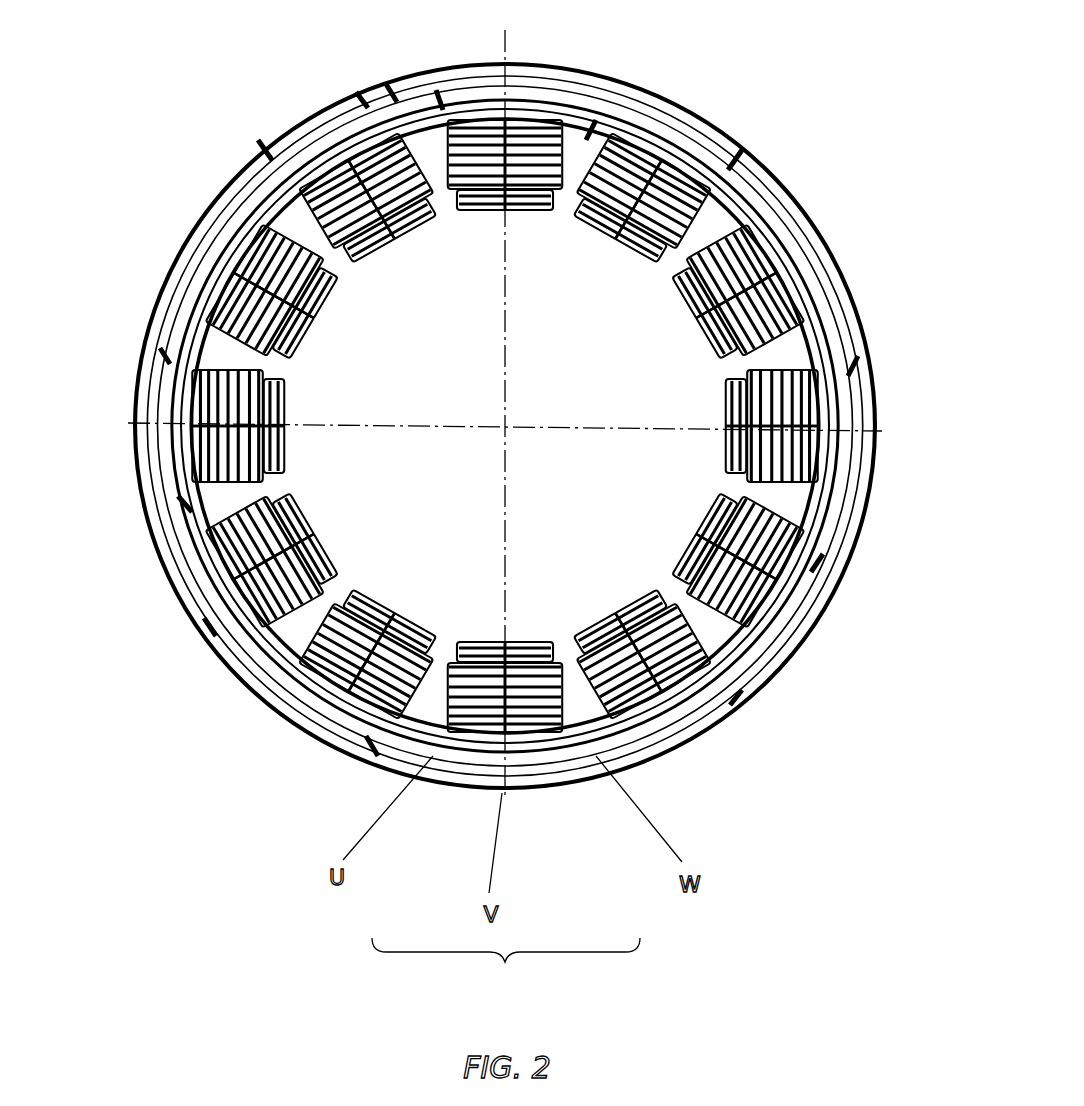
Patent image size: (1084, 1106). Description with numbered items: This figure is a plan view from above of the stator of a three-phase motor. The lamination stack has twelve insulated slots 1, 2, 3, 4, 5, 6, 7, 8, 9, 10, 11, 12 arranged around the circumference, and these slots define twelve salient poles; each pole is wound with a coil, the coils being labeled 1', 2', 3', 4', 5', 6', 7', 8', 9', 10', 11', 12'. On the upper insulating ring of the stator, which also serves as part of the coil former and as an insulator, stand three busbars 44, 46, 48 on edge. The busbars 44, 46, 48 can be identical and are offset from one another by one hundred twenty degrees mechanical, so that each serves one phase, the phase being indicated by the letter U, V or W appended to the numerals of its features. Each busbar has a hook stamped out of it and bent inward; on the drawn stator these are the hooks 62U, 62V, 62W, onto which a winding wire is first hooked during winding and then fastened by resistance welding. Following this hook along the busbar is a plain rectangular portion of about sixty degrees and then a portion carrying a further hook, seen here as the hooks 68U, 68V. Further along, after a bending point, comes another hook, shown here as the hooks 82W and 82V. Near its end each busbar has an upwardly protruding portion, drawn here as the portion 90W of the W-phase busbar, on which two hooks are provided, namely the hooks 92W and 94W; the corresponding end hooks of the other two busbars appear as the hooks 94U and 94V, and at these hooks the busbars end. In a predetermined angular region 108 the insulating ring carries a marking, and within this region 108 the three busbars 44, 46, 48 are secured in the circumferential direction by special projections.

The slot 1 is at (475, 662).
The coil 1' is at (533, 660).
The slot 2 is at (613, 653).
The coil 2' is at (663, 628).
The slot 3 is at (714, 577).
The coil 3' is at (737, 532).
The slot 4 is at (746, 459).
The coil 4' is at (742, 398).
The slot 5 is at (734, 325).
The coil 5' is at (716, 282).
The slot 6 is at (663, 229).
The coil 6' is at (614, 195).
The slot 7 is at (533, 181).
The coil 7' is at (476, 181).
The slot 8 is at (397, 192).
The coil 8' is at (349, 217).
The slot 9 is at (304, 271).
The coil 9' is at (280, 319).
The slot 10 is at (274, 392).
The coil 10' is at (275, 438).
The slot 11 is at (281, 528).
The coil 11' is at (305, 573).
The slot 12 is at (354, 623).
The coil 12' is at (402, 646).
The busbar 44 is at (808, 627).
The busbar 46 is at (273, 703).
The busbar 48 is at (672, 740).
The hook 62U is at (372, 748).
The hook 62V is at (265, 150).
The hook 62W is at (853, 366).
The hook 68U is at (165, 355).
The hook 68V is at (735, 160).
The hook 82W is at (590, 130).
The hook 82V is at (737, 690).
The upwardly protruding portion 90W is at (392, 92).
The hook 92W is at (362, 100).
The hook 94W is at (440, 100).
The hook 94U is at (817, 563).
The hook 94V is at (210, 627).
The predetermined angular region 108 is at (506, 970).